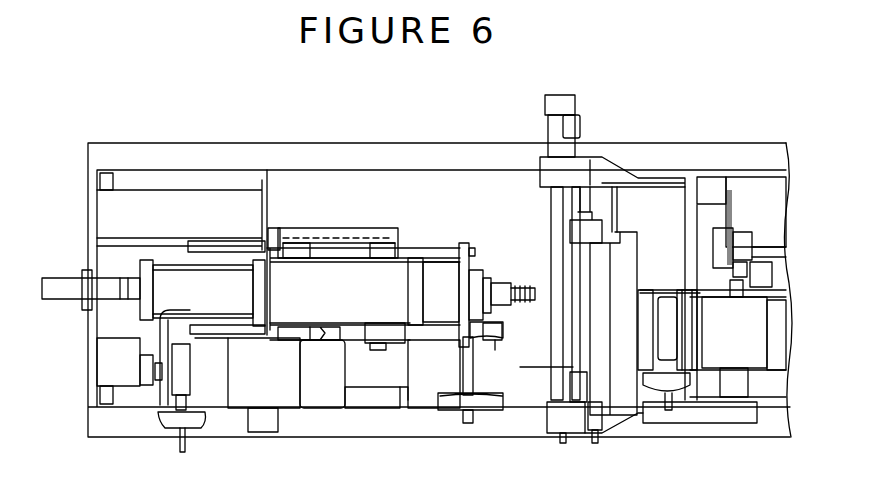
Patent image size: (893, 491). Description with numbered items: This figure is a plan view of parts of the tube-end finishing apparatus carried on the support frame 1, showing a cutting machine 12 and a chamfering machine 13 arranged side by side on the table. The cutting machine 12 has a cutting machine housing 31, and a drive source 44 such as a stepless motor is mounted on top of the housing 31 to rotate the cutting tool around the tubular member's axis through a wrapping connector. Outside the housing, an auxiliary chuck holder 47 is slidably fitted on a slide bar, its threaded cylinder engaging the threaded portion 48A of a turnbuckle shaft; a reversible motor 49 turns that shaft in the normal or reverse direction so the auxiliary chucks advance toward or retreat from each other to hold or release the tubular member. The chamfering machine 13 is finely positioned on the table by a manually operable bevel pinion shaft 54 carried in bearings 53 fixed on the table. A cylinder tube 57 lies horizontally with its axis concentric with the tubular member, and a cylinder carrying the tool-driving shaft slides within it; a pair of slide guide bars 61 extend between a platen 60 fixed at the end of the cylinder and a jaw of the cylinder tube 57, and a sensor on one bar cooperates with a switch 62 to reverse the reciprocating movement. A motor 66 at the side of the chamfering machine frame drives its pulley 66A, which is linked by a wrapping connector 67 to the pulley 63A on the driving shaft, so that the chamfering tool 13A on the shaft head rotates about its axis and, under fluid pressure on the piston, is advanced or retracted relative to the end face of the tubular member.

The support frame 1 is at (757, 424).
The cutting machine 12 is at (697, 170).
The chamfering machine 13 is at (262, 228).
The chamfering tool 13A is at (520, 284).
The cutting machine housing 31 is at (626, 272).
The drive source 44 is at (684, 300).
The auxiliary chuck holder 47 is at (548, 210).
The threaded portion 48A is at (563, 444).
The reversible motor 49 is at (548, 123).
The bearings 53 is at (493, 336).
The bevel pinion shaft 54 is at (465, 369).
The cylinder tube 57 is at (356, 300).
The platen 60 is at (464, 244).
The slide guide bars 61 is at (190, 247).
The switch 62 is at (375, 248).
The pulley 63A is at (145, 301).
The motor 66 is at (248, 380).
The pulley 66A is at (152, 376).
The wrapping connector 67 is at (152, 342).